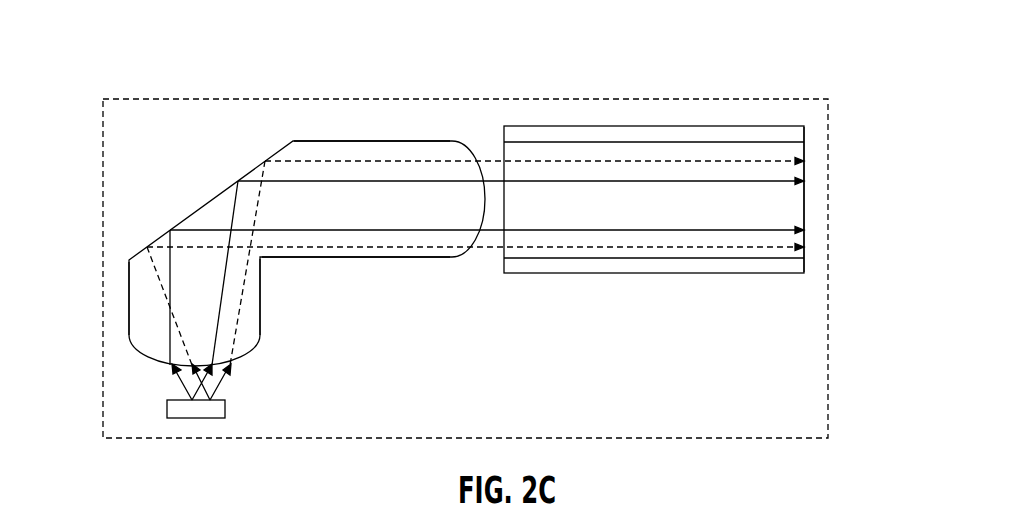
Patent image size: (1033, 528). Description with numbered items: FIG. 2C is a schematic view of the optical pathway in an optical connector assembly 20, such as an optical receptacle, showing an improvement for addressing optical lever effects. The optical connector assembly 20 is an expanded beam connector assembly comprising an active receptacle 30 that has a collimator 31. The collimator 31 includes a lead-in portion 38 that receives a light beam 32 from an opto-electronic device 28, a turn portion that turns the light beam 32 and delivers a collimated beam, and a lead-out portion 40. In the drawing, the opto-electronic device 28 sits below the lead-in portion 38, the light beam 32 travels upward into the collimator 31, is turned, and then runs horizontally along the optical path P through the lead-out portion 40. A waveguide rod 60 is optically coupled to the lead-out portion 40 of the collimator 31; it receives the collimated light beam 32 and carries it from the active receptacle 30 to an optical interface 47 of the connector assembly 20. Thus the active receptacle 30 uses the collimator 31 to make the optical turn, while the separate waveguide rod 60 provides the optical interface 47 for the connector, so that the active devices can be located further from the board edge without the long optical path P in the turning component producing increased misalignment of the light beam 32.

The optical connector assembly 20 is at (828, 361).
The opto-electronic device 28 is at (202, 410).
The active receptacle 30 is at (199, 167).
The collimator 31 is at (252, 318).
The light beam 32 is at (410, 235).
The lead-in portion 38 is at (139, 309).
The lead-out portion 40 is at (417, 162).
The optical interface 47 is at (813, 213).
The waveguide rod 60 is at (688, 121).
The optical path P is at (393, 123).